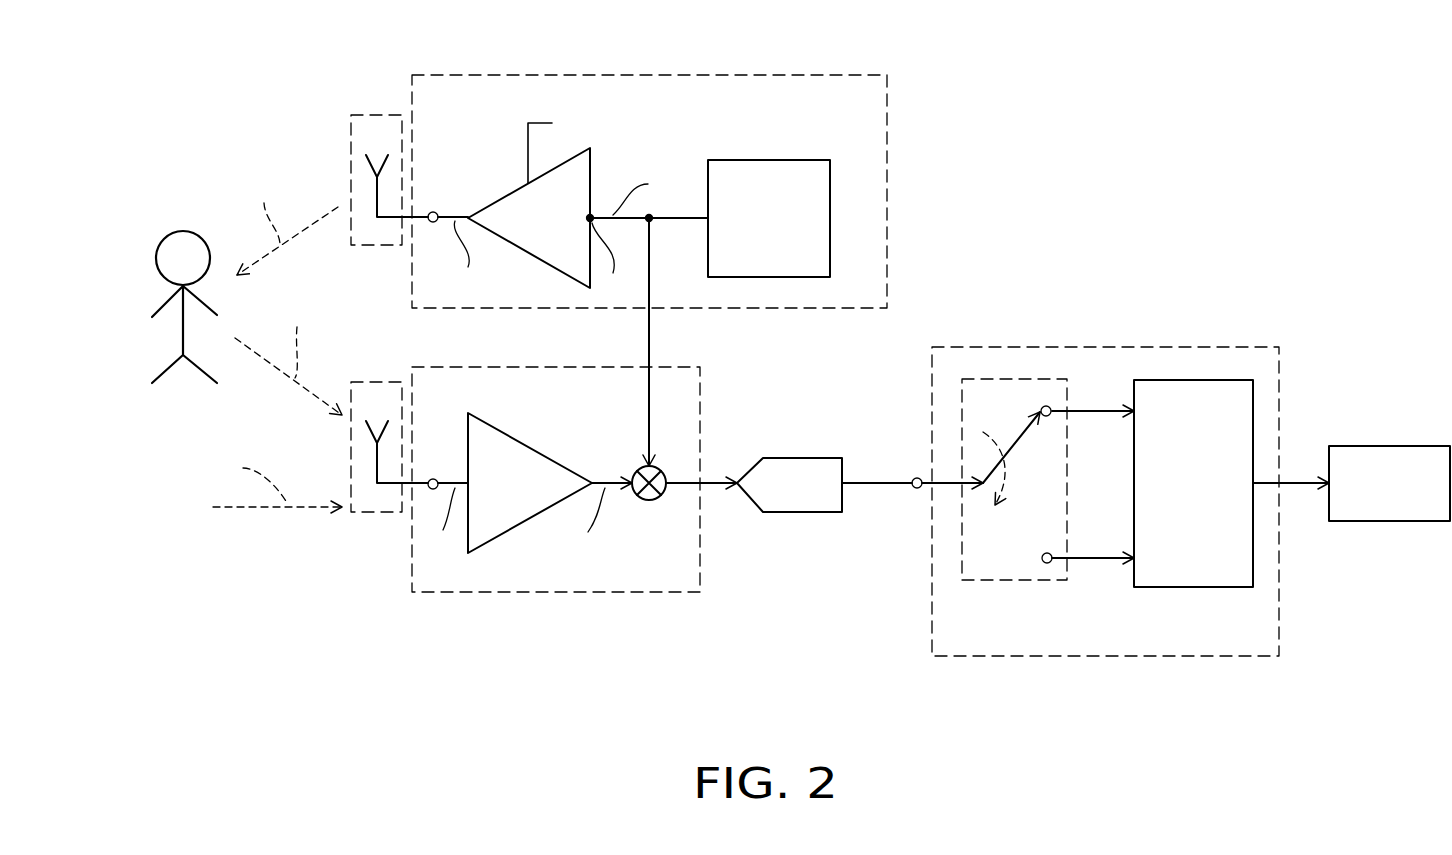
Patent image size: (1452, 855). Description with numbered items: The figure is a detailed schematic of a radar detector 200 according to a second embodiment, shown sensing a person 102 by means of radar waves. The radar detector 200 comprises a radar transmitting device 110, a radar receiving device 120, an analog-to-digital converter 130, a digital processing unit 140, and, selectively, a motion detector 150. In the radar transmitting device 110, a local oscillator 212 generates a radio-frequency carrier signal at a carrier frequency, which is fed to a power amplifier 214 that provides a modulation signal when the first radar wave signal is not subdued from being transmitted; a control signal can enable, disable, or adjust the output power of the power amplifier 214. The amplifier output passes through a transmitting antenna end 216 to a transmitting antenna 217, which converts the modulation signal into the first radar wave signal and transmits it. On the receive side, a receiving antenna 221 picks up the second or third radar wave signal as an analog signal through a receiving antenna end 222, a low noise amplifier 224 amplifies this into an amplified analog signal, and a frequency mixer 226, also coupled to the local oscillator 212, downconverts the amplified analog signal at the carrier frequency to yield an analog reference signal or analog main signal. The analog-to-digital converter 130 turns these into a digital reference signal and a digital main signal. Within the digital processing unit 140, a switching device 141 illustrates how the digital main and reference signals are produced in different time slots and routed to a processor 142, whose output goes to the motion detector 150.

The radar detector 200 is at (1450, 752).
The user / human body 102 is at (172, 340).
The radar transmitting device 110 is at (818, 73).
The transmitting antenna 217 is at (378, 113).
The transmitting antenna end 216 is at (433, 212).
The power amplifier 214 is at (592, 167).
The local oscillator 212 is at (743, 158).
The radar receiving device 120 is at (702, 388).
The receiving antenna 221 is at (378, 377).
The receiving antenna end 222 is at (433, 478).
The low noise amplifier 224 is at (528, 443).
The frequency mixer 226 is at (667, 468).
The analog-to-digital converter 130 is at (788, 458).
The digital processing unit 140 is at (1143, 344).
The switching device 141 is at (1014, 582).
The processor 142 is at (1181, 589).
The motion detector 150 is at (1360, 446).